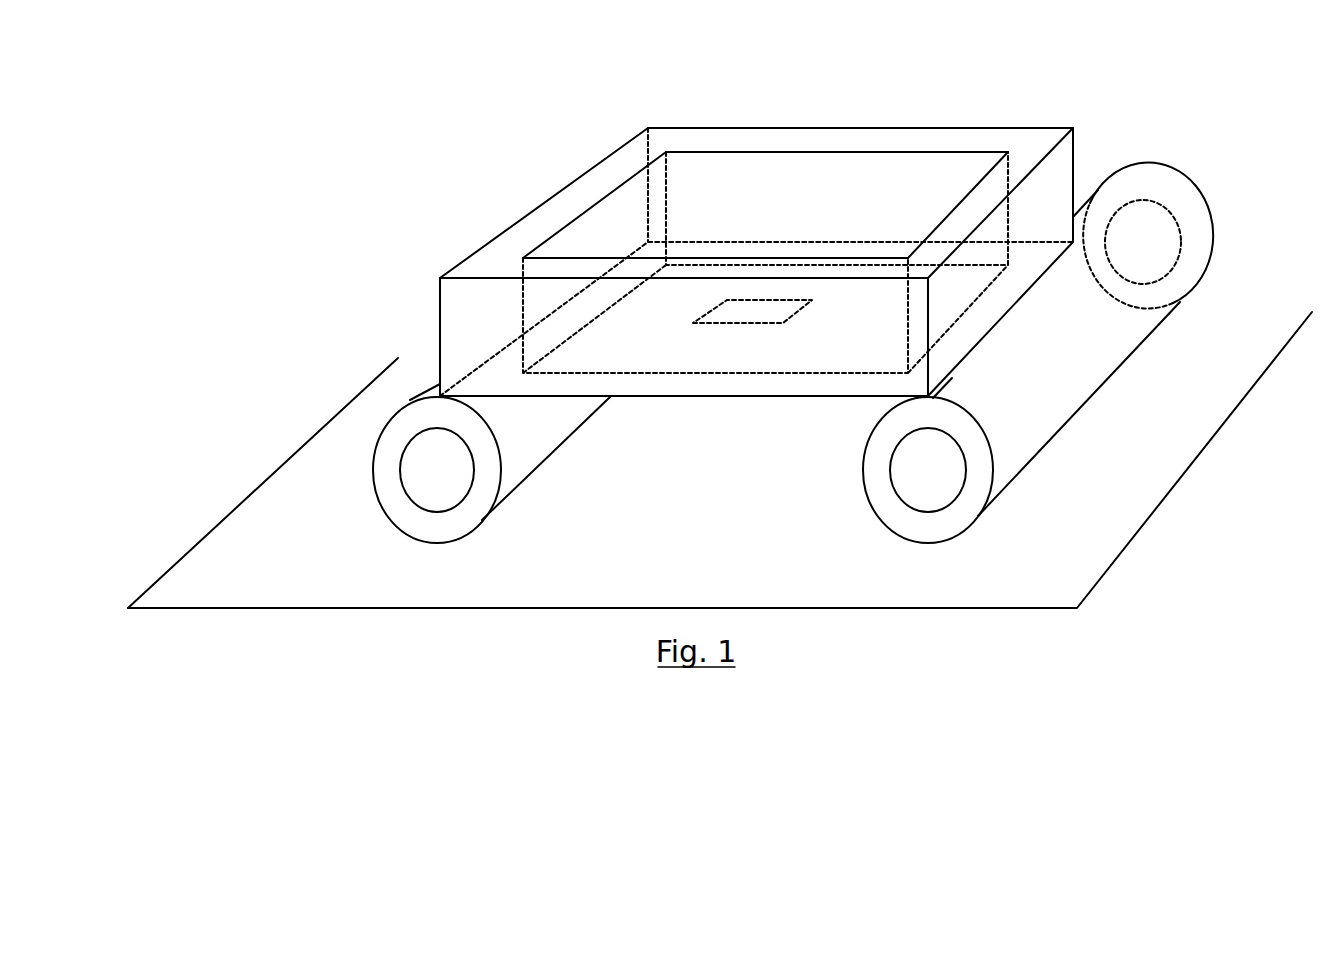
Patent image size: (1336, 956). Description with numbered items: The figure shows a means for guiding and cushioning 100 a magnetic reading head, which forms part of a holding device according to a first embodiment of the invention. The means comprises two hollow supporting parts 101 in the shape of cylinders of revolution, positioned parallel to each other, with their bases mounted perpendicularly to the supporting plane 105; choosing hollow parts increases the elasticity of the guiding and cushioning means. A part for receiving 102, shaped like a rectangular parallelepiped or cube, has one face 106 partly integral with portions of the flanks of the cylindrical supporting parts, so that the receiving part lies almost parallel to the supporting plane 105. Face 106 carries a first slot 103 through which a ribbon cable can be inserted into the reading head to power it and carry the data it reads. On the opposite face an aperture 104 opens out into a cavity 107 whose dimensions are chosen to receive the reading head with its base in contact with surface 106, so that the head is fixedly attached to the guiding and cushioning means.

The means for guiding and cushioning 100 is at (560, 165).
The hollow supporting parts 101 is at (1050, 440).
The part for receiving 102 is at (1083, 138).
The first slot 103 is at (743, 323).
The aperture 104 is at (862, 172).
The supporting plane 105 is at (1197, 198).
The face 106 is at (843, 385).
The cavity 107 is at (927, 260).